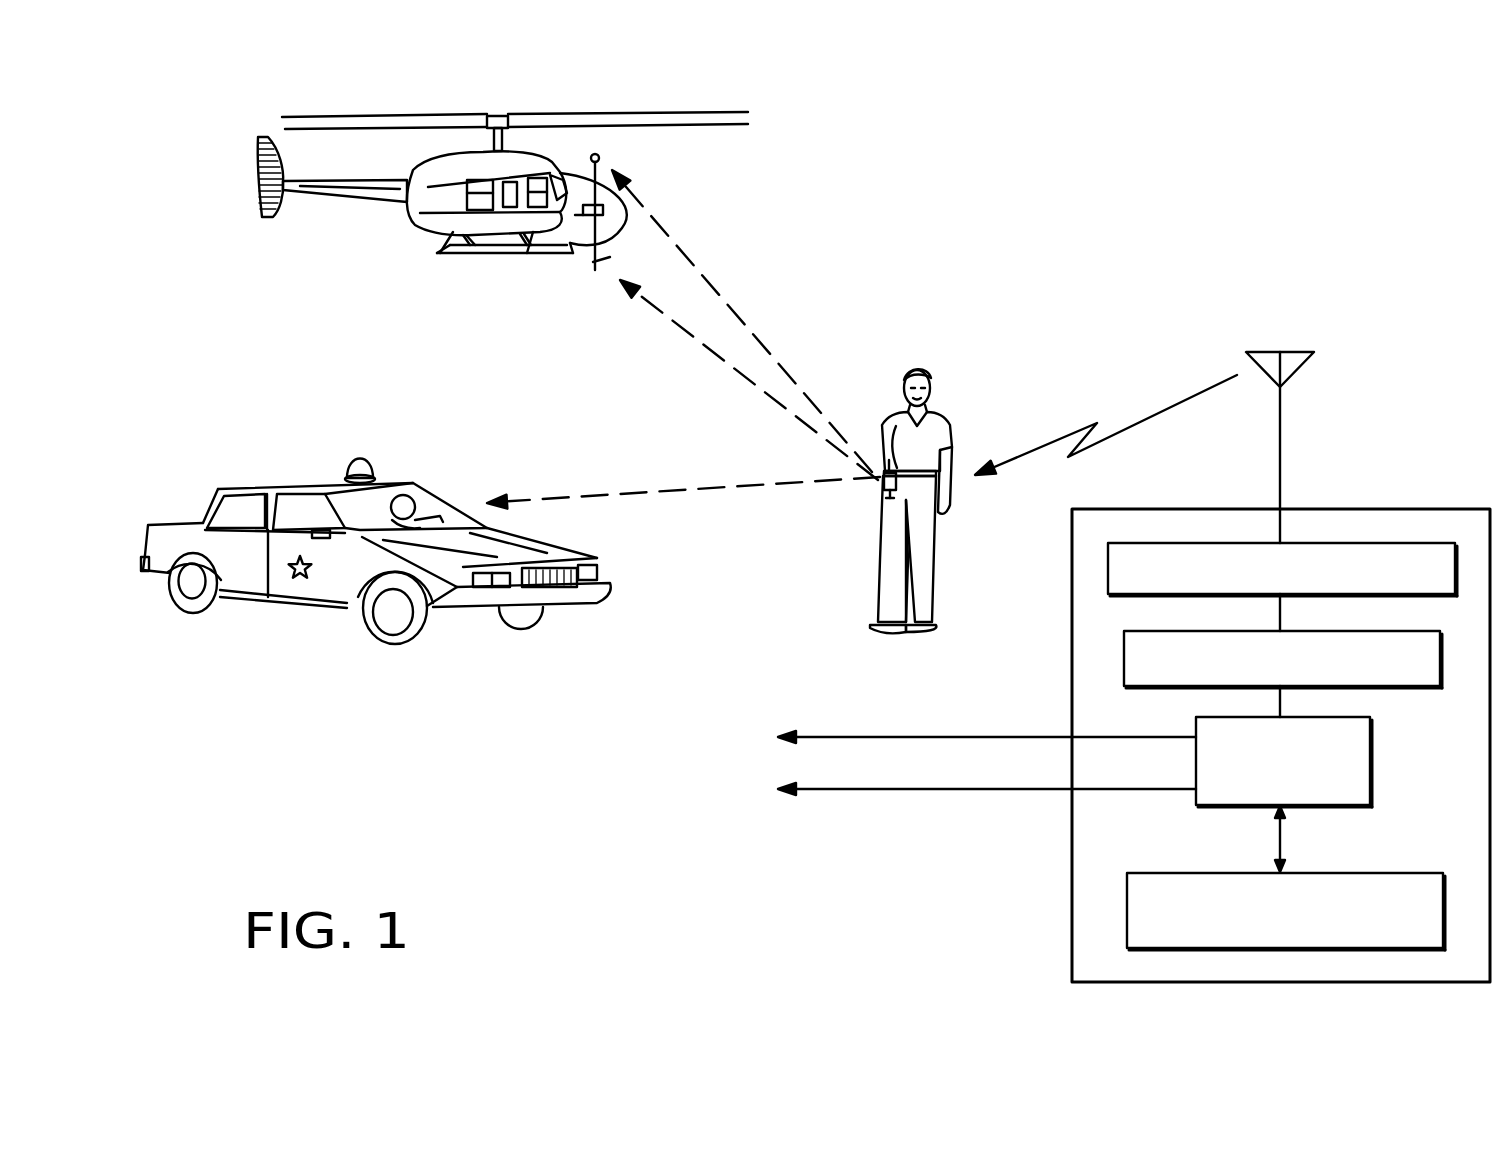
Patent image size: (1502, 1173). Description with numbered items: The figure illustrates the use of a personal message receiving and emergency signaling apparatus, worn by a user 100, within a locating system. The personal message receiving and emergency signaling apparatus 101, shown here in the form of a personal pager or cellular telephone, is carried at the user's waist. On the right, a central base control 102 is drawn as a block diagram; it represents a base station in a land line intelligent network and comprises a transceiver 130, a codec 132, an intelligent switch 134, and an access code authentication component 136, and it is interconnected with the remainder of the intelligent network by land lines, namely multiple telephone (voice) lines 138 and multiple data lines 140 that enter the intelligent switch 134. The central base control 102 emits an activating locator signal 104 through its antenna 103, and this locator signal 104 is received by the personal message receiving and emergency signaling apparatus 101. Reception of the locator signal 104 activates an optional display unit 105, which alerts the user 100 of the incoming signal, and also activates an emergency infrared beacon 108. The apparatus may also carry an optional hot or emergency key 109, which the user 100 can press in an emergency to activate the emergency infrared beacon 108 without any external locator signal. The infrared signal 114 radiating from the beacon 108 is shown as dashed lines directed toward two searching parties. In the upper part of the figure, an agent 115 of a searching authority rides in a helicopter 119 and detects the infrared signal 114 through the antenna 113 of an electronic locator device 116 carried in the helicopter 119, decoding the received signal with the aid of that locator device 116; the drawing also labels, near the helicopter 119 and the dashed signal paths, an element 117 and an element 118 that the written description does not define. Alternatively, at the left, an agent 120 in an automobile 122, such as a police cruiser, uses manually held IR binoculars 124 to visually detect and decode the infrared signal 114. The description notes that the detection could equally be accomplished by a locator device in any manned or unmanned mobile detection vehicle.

The user 100 is at (927, 387).
The personal message receiving and emergency signaling apparatus 101 is at (893, 477).
The display unit 105 is at (896, 462).
The emergency infrared beacon 108 is at (880, 480).
The emergency key 109 is at (883, 487).
The antenna 113 is at (610, 257).
The infrared signal 114 is at (770, 393).
The agent 115 is at (558, 182).
The electronic locator device 116 is at (602, 217).
The helicopter antenna 117 is at (603, 157).
The transmitted signal to helicopter 118 is at (787, 358).
The helicopter 119 is at (420, 227).
The agent 120 is at (383, 495).
The automobile 122 is at (283, 477).
The IR binoculars 124 is at (427, 488).
The central base control 102 is at (1343, 508).
The antenna 103 is at (1305, 352).
The activating locator signal 104 is at (1142, 420).
The transceiver 130 is at (1108, 598).
The codec 132 is at (1440, 667).
The intelligent switch 134 is at (1370, 777).
The access code authentication component 136 is at (1170, 873).
The telephone lines 138 is at (813, 737).
The data lines 140 is at (825, 790).